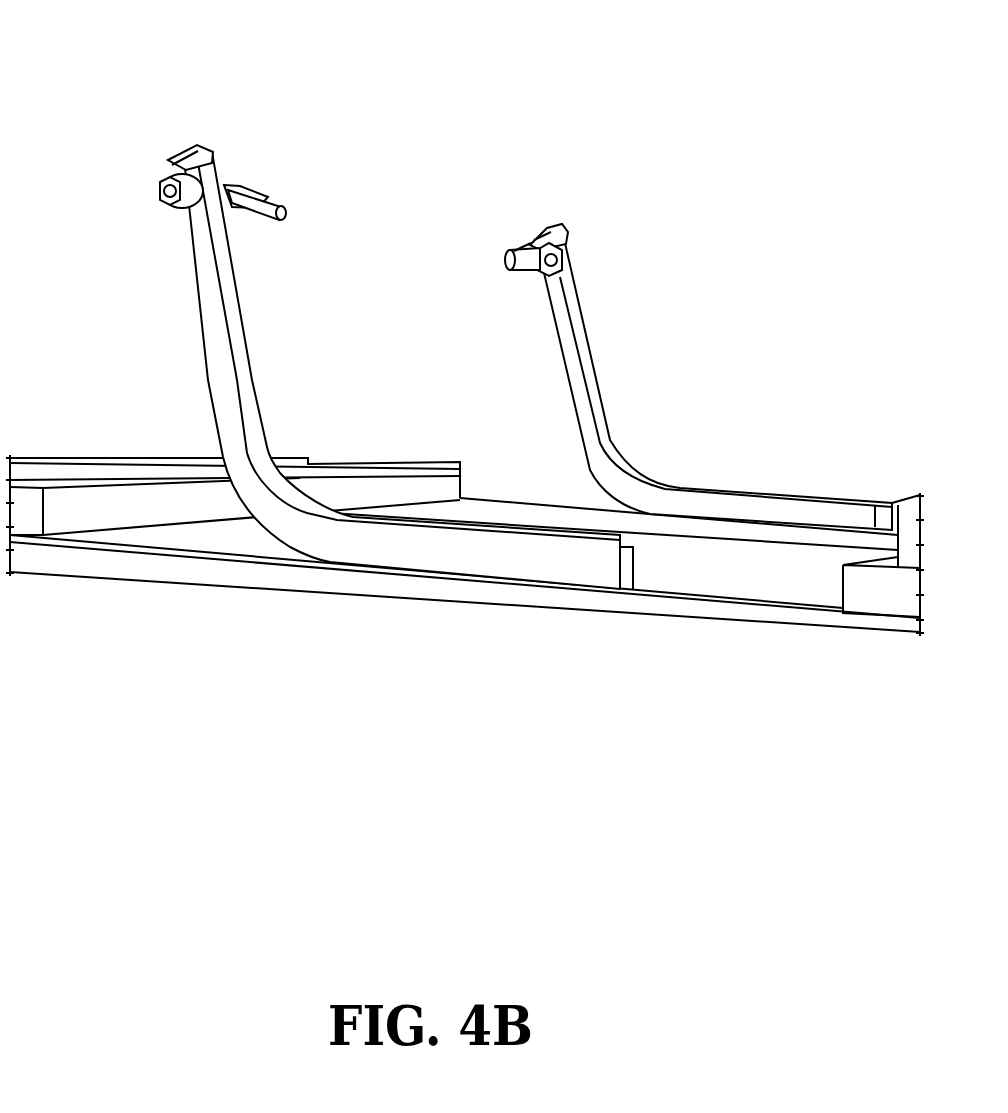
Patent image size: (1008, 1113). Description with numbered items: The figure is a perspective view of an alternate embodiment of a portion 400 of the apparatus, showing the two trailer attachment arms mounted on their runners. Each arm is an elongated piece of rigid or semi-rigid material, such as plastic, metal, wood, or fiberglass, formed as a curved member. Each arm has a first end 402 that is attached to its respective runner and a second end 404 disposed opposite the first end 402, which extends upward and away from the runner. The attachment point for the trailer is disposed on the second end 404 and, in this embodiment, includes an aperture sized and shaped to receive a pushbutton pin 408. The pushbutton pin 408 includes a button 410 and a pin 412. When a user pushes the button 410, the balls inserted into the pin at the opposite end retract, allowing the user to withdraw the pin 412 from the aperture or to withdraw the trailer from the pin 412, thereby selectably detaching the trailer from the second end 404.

The portion of the apparatus 400 is at (465, 349).
The first end 402 is at (465, 563).
The second end 404 is at (258, 174).
The pushbutton pin 408 is at (212, 151).
The button 410 is at (163, 196).
The pin 412 is at (268, 194).